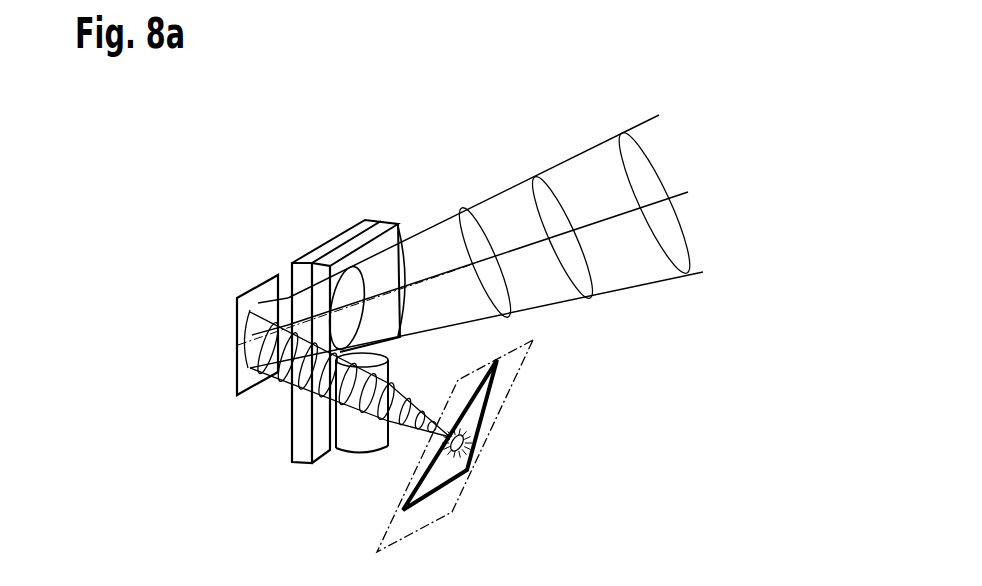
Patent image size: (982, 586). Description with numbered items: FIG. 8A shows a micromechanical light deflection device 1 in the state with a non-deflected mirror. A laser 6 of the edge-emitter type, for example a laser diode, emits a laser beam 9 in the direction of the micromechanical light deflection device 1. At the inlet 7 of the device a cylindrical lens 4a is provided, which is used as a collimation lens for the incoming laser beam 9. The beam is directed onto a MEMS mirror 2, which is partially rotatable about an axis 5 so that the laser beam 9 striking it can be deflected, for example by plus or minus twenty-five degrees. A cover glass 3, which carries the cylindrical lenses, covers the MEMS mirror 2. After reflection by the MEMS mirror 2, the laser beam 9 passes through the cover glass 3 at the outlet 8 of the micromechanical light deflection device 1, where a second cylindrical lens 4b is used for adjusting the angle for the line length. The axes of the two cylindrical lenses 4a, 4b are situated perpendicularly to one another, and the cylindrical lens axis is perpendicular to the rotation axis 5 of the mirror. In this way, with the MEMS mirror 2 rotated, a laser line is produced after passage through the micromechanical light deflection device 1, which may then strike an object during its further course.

The micromechanical light deflection device 1 is at (209, 162).
The MEMS mirror 2 is at (237, 320).
The cover glass 3 is at (292, 438).
The cylindrical lens at inlet 4a is at (360, 453).
The cylindrical lens at outlet 4b is at (380, 345).
The axis 5 is at (250, 271).
The laser 6 is at (465, 498).
The inlet 7 is at (320, 488).
The outlet 8 is at (334, 211).
The laser beam 9 is at (563, 158).